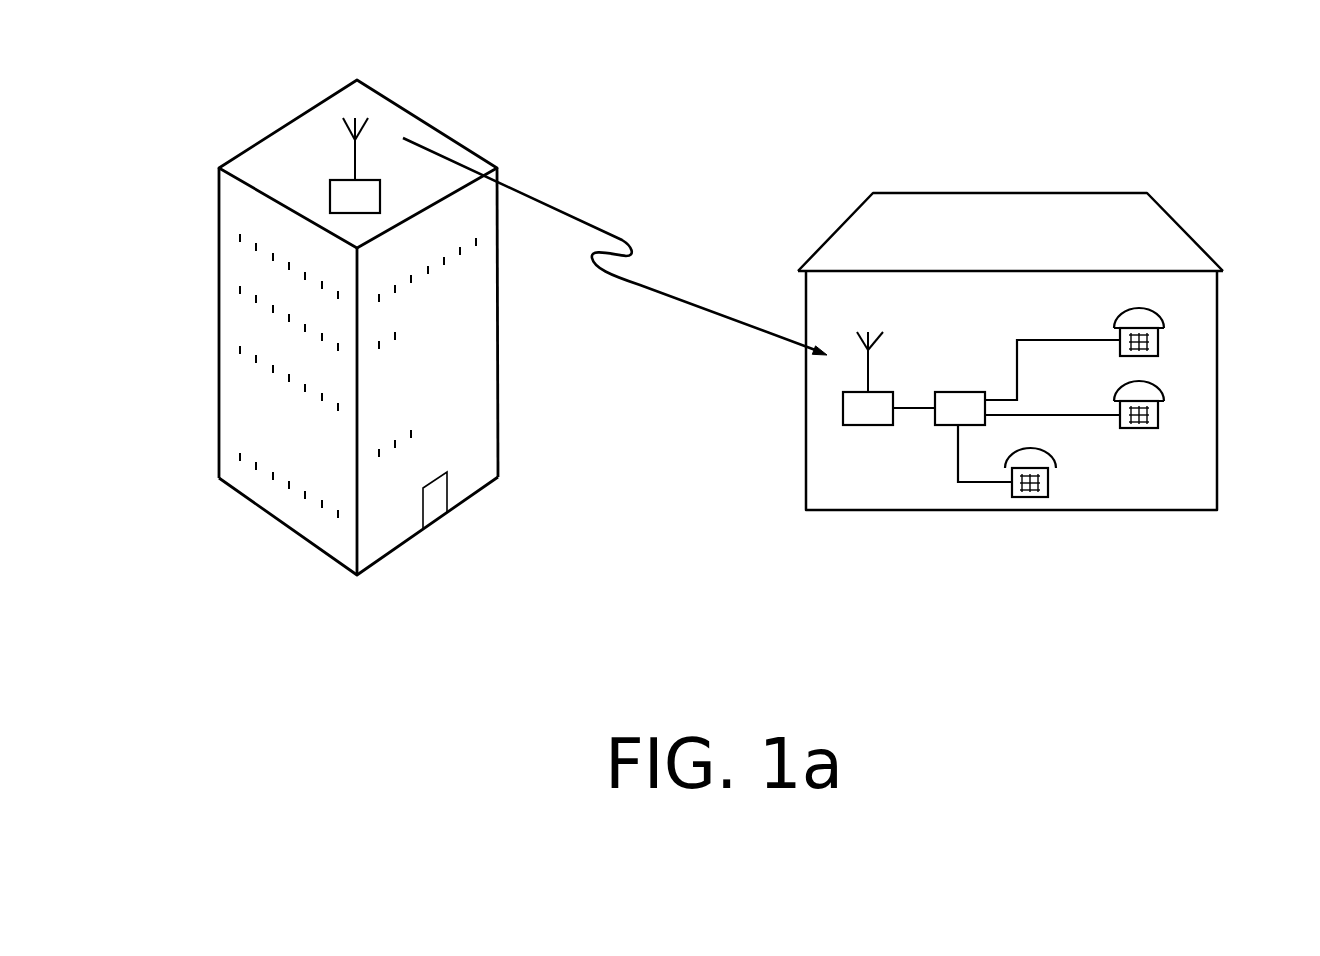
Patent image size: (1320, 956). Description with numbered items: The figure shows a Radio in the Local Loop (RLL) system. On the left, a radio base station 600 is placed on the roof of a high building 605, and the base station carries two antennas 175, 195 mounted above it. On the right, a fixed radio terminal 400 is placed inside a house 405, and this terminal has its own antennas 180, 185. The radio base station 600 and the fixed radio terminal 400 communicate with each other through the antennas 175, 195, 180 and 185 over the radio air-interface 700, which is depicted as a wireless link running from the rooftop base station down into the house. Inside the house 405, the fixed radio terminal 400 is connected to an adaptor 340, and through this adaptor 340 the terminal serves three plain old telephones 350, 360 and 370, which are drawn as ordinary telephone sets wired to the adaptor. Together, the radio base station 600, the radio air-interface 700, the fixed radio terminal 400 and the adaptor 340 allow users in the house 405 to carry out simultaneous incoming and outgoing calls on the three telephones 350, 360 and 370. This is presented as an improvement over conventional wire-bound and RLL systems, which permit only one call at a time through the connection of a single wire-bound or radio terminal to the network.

The antenna 175 is at (460, 113).
The antenna 195 is at (367, 128).
The radio base station 600 is at (328, 192).
The high building 605 is at (288, 530).
The radio air-interface 700 is at (592, 220).
The house 405 is at (1155, 512).
The antenna 180 is at (933, 339).
The antenna 185 is at (878, 343).
The fixed radio terminal 400 is at (868, 425).
The adaptor 340 is at (947, 425).
The plain old telephone 350 is at (1158, 342).
The plain old telephone 360 is at (1158, 415).
The plain old telephone 370 is at (1028, 497).